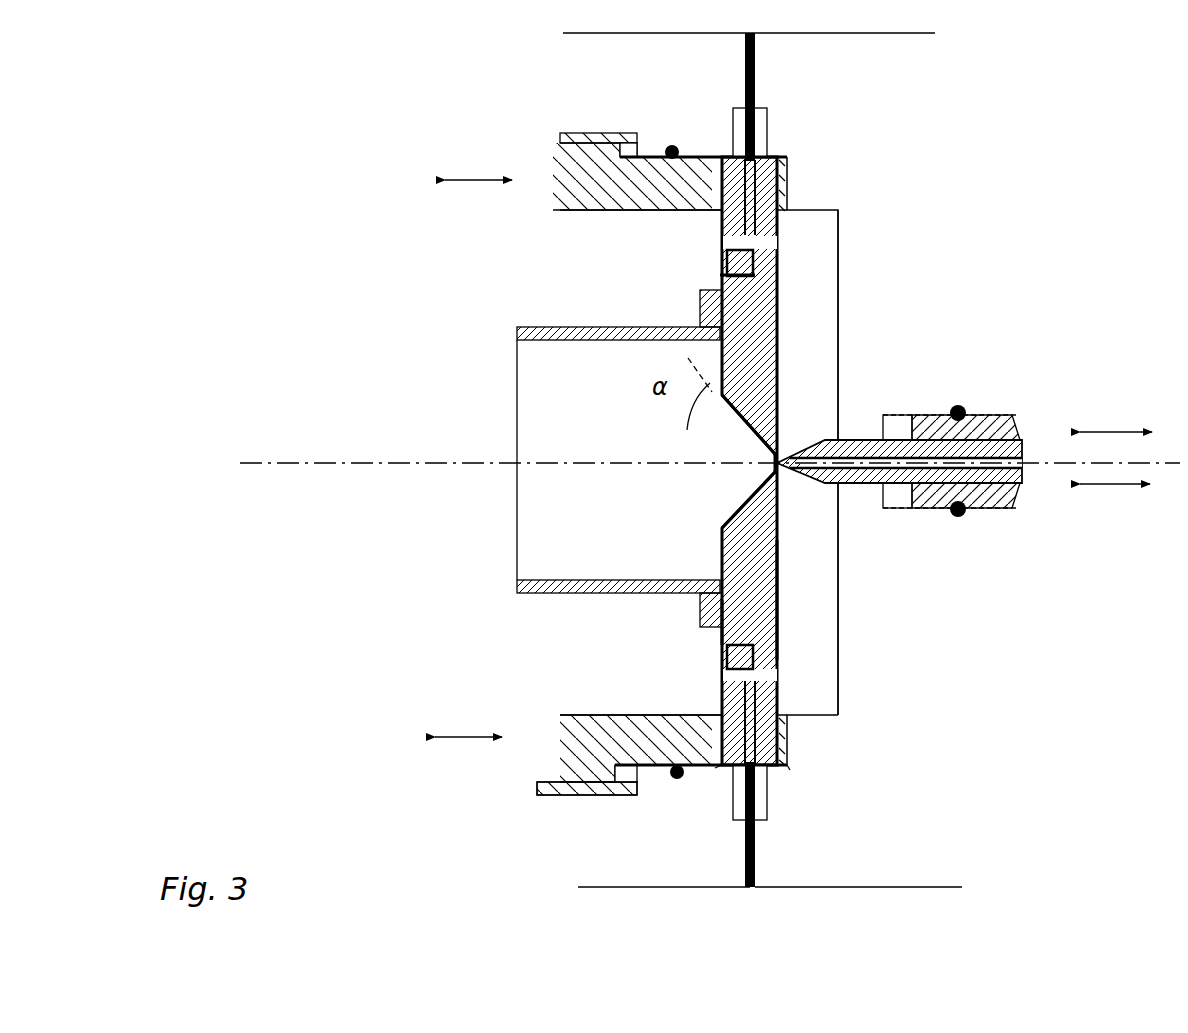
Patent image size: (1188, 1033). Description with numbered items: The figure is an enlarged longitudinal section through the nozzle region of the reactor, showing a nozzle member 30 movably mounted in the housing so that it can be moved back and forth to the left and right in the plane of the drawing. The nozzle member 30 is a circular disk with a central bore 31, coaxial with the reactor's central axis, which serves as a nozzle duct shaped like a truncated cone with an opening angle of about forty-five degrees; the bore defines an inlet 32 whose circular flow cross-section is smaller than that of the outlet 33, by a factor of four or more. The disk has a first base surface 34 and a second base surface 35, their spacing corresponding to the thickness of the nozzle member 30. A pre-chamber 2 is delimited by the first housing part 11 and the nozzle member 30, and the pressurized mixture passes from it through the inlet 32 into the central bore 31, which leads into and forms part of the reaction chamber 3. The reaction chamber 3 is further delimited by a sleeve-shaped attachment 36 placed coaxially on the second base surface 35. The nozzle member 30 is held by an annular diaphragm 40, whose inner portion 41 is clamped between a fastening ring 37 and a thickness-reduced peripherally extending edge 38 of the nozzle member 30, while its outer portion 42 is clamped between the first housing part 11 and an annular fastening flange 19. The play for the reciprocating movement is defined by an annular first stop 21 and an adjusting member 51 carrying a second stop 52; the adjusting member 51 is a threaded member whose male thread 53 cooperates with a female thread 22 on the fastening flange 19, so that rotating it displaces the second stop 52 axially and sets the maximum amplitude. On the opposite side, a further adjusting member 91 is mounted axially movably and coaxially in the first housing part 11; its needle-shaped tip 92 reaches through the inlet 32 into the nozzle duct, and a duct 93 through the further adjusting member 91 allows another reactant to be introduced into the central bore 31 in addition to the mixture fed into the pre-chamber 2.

The pre-chamber 2 is at (815, 664).
The reaction chamber 3 is at (552, 401).
The first housing part 11 is at (982, 763).
The annular fastening flange 19 is at (533, 852).
The annular first stop 21 is at (790, 188).
The female thread 22 is at (597, 782).
The nozzle member 30 is at (780, 287).
The central bore 31 is at (735, 447).
The inlet 32 is at (780, 447).
The outlet 33 is at (722, 505).
The first base surface 34 is at (778, 602).
The second base surface 35 is at (722, 628).
The sleeve-shaped attachment 36 is at (597, 327).
The fastening ring 37 is at (715, 768).
The thickness-reduced peripherally extending edge 38 is at (790, 770).
The annular diaphragm 40 is at (757, 853).
The inner portion 41 is at (725, 658).
The outer portion 42 is at (748, 848).
The adjusting member 51 is at (560, 197).
The second stop 52 is at (672, 150).
The male thread 53 is at (580, 800).
The further adjusting member 91 is at (1025, 492).
The needle-shaped tip 92 is at (793, 473).
The duct 93 is at (1008, 447).